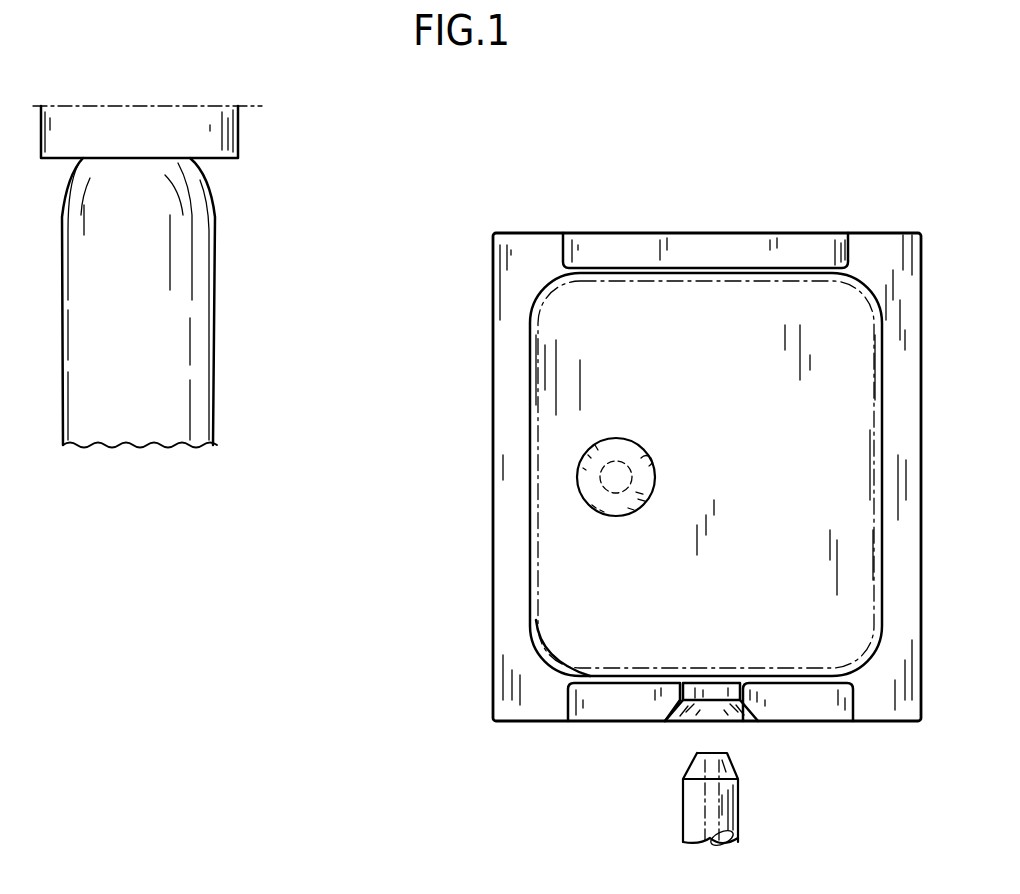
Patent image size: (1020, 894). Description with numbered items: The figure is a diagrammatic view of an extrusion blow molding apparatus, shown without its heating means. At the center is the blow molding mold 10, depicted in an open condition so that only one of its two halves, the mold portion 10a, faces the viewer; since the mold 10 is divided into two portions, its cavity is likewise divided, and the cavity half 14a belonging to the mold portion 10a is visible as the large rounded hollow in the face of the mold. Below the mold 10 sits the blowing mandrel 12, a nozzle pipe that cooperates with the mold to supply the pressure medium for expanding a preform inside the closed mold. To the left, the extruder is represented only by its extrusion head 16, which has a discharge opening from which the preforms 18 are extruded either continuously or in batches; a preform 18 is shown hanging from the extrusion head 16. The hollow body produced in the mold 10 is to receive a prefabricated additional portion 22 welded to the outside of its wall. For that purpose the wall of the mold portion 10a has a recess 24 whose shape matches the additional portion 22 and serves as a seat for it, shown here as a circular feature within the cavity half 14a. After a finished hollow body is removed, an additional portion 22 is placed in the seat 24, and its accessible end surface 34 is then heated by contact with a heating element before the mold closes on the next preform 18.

The blow molding mold 10 is at (462, 236).
The first mold portion 10a is at (508, 353).
The blowing mandrel 12 is at (740, 803).
The cavity half 14a is at (562, 630).
The extrusion head 16 is at (238, 133).
The preform 18 is at (200, 277).
The additional portion 22 is at (648, 492).
The recess 24 is at (651, 463).
The accessible end surface 34 is at (606, 503).